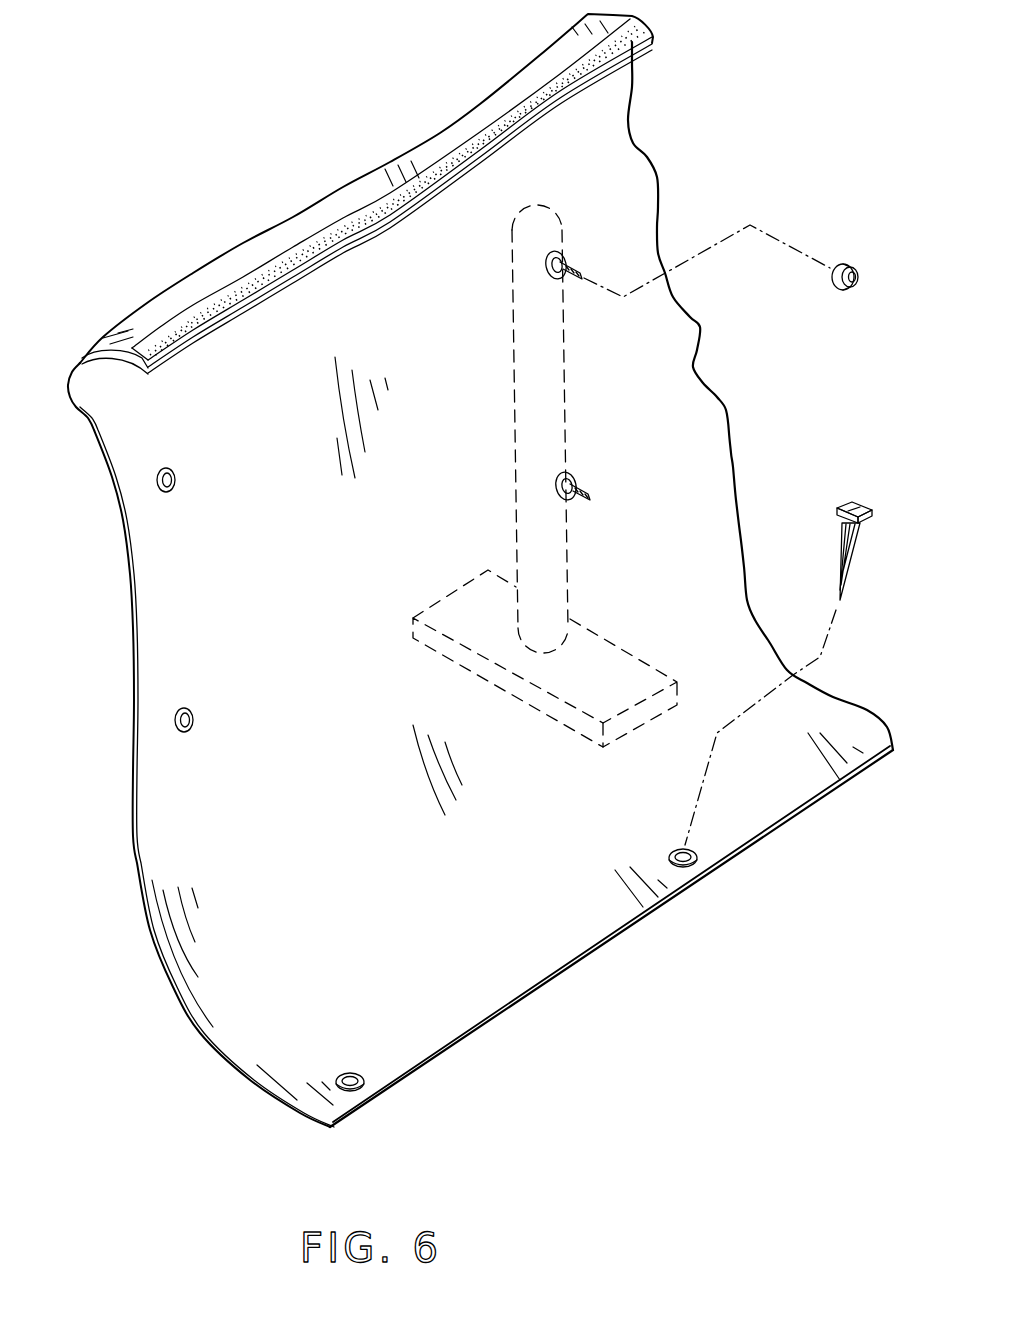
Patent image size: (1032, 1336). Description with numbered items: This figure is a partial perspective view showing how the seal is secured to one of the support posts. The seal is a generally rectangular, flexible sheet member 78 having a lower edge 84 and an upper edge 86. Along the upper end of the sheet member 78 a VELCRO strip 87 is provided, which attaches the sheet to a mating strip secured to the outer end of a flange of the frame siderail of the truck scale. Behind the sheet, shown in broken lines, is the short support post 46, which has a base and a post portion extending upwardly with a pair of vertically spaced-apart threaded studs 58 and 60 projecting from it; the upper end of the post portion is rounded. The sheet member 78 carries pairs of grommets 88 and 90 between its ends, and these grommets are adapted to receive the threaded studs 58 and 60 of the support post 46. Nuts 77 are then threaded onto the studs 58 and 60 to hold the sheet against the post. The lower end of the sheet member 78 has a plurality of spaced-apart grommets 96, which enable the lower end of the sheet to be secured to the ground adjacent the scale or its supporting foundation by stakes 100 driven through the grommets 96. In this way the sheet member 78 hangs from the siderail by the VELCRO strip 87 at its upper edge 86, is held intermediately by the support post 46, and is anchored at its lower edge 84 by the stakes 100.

The short support post 46 is at (452, 590).
The threaded stud 58 is at (590, 497).
The threaded stud 60 is at (580, 273).
The nut 77 is at (852, 262).
The sheet member 78 is at (649, 151).
The lower edge 84 is at (792, 822).
The upper edge 86 is at (636, 62).
The VELCRO strip 87 is at (332, 236).
The grommet 88 is at (176, 731).
The grommet 90 is at (157, 494).
The grommet 96 is at (684, 870).
The stake 100 is at (857, 543).